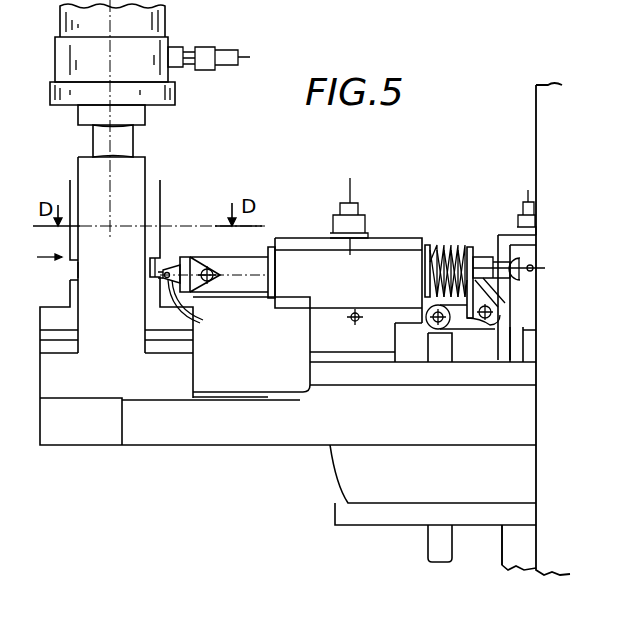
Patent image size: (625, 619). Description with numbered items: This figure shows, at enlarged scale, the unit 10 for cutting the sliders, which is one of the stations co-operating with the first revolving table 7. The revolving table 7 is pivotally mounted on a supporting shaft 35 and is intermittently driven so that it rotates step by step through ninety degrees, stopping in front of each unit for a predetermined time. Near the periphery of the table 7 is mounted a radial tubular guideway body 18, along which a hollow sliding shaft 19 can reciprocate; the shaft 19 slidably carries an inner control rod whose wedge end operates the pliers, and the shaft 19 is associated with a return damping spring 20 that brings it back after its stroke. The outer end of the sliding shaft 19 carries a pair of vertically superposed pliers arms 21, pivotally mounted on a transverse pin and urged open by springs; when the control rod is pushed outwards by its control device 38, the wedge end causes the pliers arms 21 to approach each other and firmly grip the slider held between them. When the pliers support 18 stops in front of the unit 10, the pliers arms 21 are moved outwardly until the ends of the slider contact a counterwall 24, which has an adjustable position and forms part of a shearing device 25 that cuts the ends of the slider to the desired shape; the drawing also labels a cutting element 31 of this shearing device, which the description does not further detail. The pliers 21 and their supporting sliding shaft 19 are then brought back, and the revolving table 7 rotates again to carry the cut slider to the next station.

The revolving table 7 is at (283, 450).
The unit 10 is at (346, 247).
The radial tubular guideway body 18 is at (385, 258).
The sliding shaft 19 is at (240, 290).
The return damping spring 20 is at (448, 247).
The pliers arms 21 is at (198, 309).
The counterwall 24 is at (148, 268).
The shearing device 25 is at (157, 165).
The cutting tool 31 is at (168, 272).
The supporting shaft 35 is at (513, 538).
The control device 38 is at (447, 343).